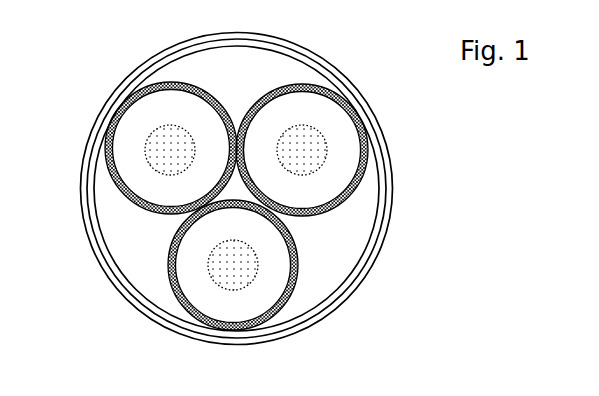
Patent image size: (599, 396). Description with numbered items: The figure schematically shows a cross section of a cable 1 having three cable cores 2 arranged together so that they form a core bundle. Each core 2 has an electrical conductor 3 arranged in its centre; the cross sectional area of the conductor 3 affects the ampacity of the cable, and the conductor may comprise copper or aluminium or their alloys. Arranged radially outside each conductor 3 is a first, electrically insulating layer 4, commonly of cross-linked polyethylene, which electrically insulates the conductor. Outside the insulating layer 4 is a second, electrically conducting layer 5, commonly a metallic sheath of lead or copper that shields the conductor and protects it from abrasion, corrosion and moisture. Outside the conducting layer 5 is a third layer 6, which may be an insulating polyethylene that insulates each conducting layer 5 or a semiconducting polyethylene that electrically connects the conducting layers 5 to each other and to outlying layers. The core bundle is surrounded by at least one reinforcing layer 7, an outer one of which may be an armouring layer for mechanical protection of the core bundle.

The cable 1 is at (275, 189).
The cable core 2 is at (205, 197).
The electrical conductor 3 is at (308, 157).
The first electrically insulating layer 4 is at (307, 192).
The second electrically conducting layer 5 is at (273, 97).
The third layer 6 is at (257, 101).
The reinforcing layer 7 is at (372, 263).